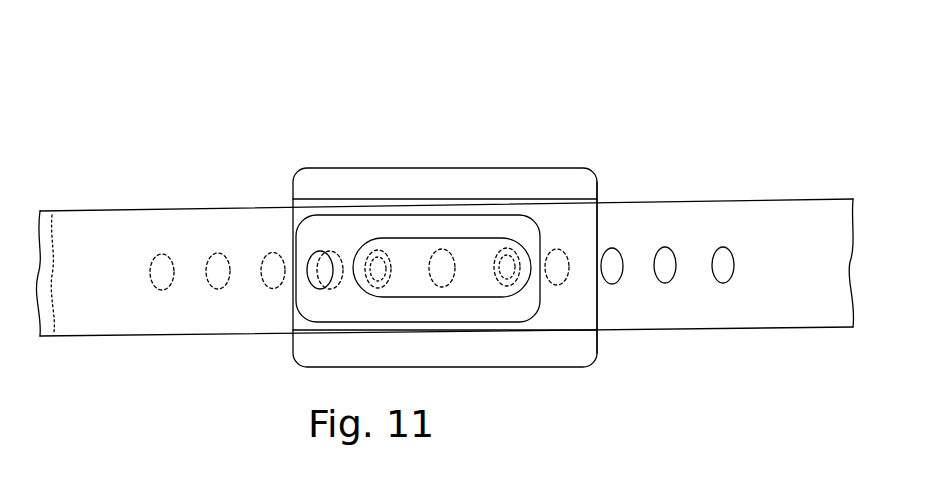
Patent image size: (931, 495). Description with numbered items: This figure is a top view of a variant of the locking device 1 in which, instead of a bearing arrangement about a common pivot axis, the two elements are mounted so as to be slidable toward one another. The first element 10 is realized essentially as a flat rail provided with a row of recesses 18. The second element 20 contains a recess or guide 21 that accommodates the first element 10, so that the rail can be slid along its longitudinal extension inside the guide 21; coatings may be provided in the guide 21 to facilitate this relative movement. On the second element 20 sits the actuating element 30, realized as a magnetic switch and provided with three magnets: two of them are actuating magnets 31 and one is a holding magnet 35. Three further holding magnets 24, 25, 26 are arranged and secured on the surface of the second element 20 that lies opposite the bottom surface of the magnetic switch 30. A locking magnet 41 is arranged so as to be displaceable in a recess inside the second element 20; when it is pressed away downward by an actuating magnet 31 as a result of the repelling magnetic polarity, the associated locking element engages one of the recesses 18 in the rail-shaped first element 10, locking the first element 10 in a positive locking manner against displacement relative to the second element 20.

The locking device 1 is at (415, 107).
The first element 10 is at (657, 215).
The recesses 18 is at (155, 258).
The second element 20 is at (433, 180).
The guide 21 is at (595, 200).
The holding magnet 24 is at (483, 280).
The holding magnet 25 is at (373, 270).
The holding magnet 26 is at (310, 260).
The actuating element 30 is at (407, 246).
The actuating magnets 31 is at (447, 247).
The holding magnet 35 is at (362, 252).
The locking magnet 41 is at (443, 270).